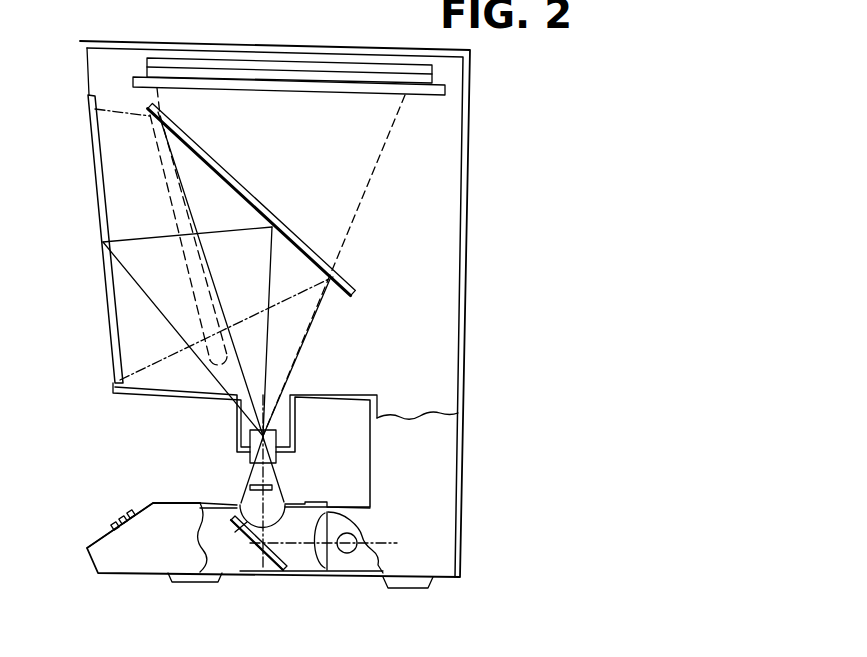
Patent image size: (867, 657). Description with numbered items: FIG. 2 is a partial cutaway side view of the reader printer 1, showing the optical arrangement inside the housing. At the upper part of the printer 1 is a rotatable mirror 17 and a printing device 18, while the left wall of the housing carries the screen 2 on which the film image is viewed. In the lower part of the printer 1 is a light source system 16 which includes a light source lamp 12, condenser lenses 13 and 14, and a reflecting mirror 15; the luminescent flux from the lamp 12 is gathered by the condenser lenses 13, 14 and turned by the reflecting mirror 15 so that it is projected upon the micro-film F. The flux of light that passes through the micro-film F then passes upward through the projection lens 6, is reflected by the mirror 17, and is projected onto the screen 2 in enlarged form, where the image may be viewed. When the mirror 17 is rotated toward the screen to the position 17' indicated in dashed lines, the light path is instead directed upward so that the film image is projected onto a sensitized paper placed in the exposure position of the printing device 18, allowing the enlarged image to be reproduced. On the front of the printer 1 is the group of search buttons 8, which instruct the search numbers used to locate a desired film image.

The reader printer 1 is at (463, 289).
The screen 2 is at (107, 305).
The projection lens 6 is at (273, 455).
The search buttons 8 is at (122, 513).
The light source lamp 12 is at (350, 553).
The condenser lens 13 is at (310, 553).
The condenser lens 14 is at (242, 510).
The reflecting mirror 15 is at (266, 553).
The light source system 16 is at (241, 558).
The rotatable mirror 17 is at (252, 199).
The rotated mirror position 17' is at (169, 226).
The printing device 18 is at (400, 60).
The film F is at (273, 492).